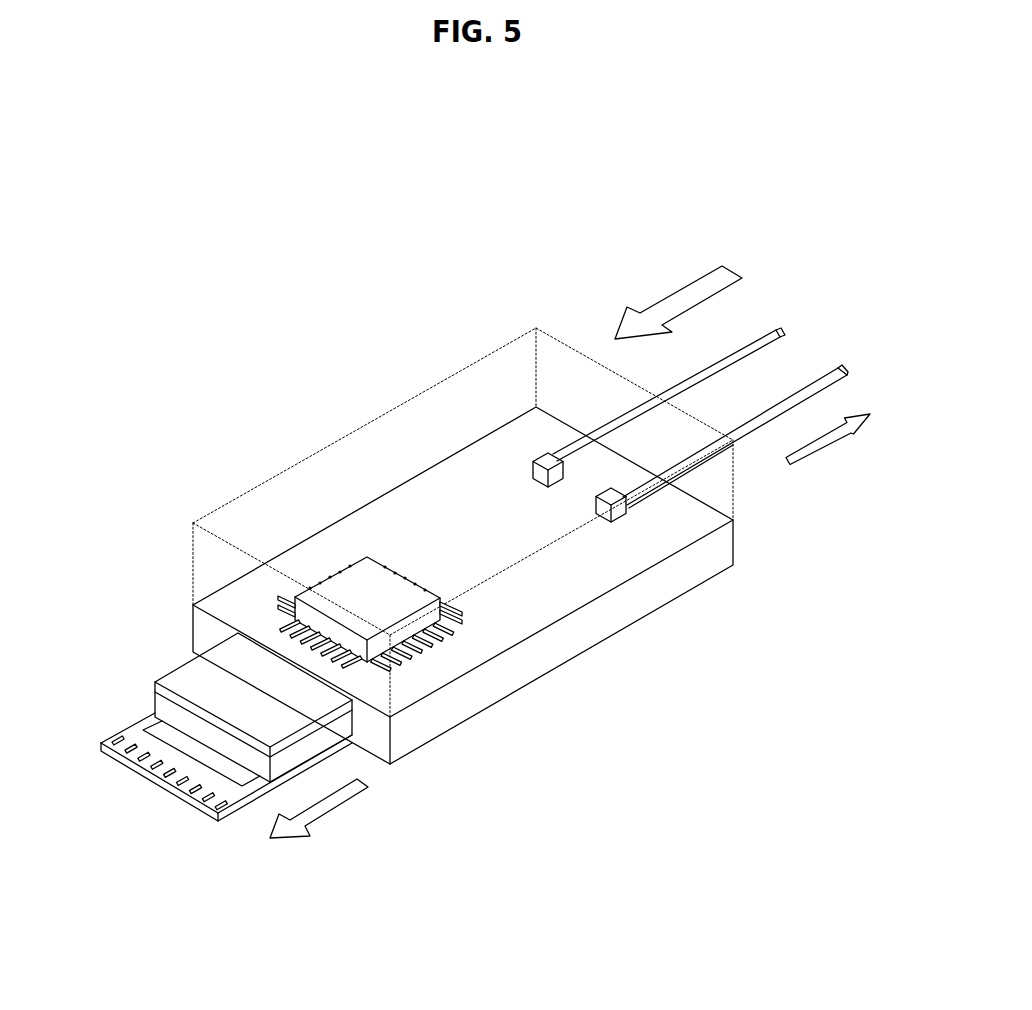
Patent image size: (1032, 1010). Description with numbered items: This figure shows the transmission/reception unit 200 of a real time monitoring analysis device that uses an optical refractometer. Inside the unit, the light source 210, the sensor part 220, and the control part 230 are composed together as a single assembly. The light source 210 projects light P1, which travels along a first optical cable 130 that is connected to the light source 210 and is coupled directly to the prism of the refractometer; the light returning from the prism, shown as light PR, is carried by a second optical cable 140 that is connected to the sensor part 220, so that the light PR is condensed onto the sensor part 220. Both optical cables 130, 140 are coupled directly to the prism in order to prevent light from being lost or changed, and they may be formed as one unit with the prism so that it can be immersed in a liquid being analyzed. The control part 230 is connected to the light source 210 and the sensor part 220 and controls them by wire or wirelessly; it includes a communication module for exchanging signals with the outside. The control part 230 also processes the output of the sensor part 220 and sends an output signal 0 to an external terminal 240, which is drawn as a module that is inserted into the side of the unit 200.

The transmission/reception unit 200 is at (884, 153).
The control part 230 is at (353, 582).
The sensor part 220 is at (540, 457).
The light source 210 is at (633, 507).
The second optical cable 140 is at (765, 335).
The first optical cable 130 is at (747, 428).
The external terminal 240 is at (135, 736).
The light condensed to the sensor part PR is at (685, 293).
The light projected from the light source P1 is at (828, 440).
The output signal 0 is at (323, 810).